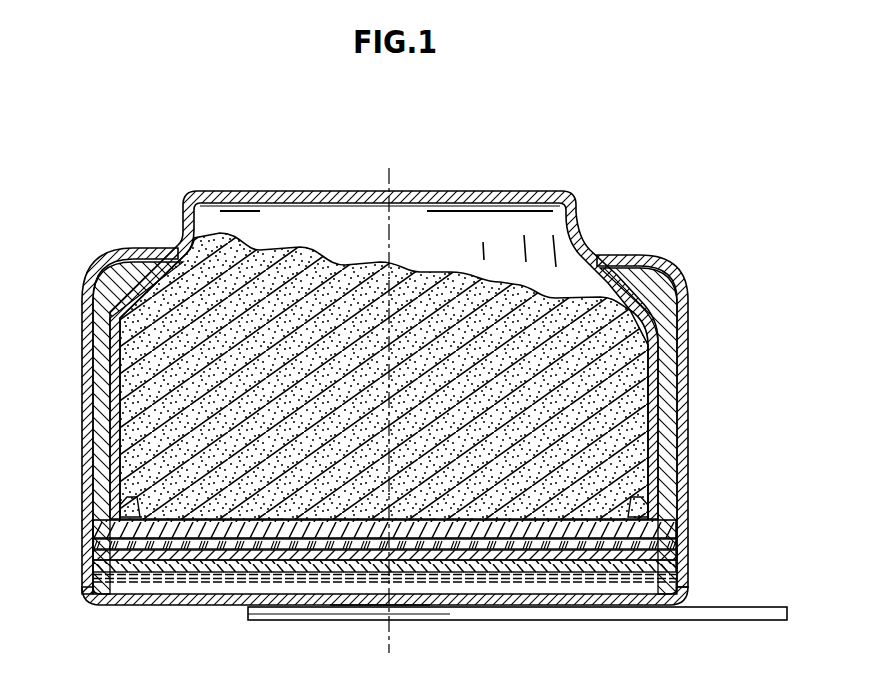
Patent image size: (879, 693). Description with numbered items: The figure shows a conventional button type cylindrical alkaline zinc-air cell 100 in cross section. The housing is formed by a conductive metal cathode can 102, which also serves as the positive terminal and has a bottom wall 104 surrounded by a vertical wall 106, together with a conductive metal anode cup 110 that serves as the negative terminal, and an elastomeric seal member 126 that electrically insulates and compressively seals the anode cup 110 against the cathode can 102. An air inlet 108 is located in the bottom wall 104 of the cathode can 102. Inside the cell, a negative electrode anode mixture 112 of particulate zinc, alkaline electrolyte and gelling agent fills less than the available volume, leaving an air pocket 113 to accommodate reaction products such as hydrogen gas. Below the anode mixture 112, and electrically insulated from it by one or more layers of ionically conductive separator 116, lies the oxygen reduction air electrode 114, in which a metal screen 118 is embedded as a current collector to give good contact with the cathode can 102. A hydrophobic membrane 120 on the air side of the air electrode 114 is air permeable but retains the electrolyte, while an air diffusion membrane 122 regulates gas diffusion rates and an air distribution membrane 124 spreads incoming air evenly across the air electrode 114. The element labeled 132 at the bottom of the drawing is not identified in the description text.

The cell 100 is at (118, 188).
The cathode can 102 is at (95, 288).
The bottom wall 104 is at (153, 607).
The vertical wall 106 is at (683, 372).
The air inlet 108 is at (377, 598).
The anode cup 110 is at (279, 190).
The anode mixture 112 is at (627, 413).
The air pocket 113 is at (553, 222).
The air electrode 114 is at (97, 557).
The separator 116 is at (95, 522).
The metal screen 118 is at (97, 540).
The hydrophobic membrane 120 is at (92, 565).
The air diffusion membrane 122 is at (92, 578).
The air distribution membrane 124 is at (113, 584).
The seal member 126 is at (100, 350).
The terminal tab 132 is at (779, 613).